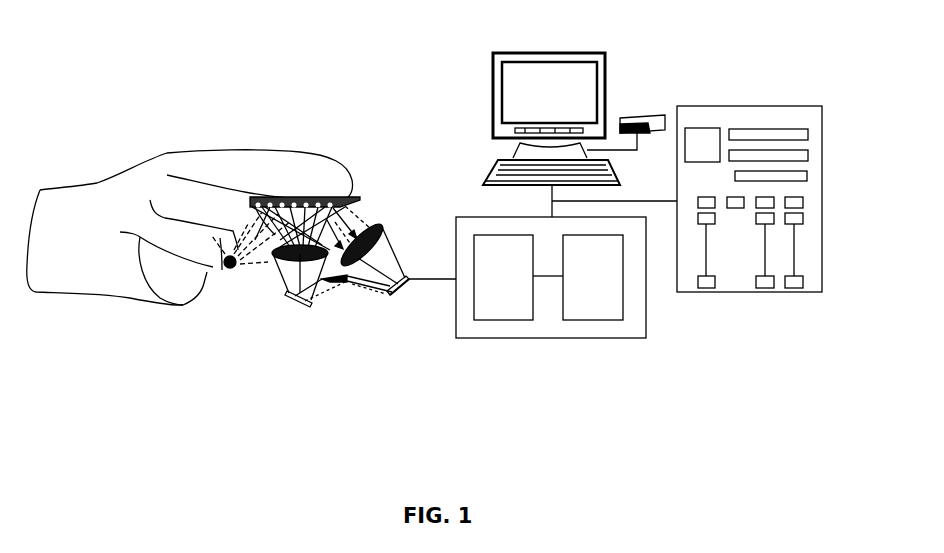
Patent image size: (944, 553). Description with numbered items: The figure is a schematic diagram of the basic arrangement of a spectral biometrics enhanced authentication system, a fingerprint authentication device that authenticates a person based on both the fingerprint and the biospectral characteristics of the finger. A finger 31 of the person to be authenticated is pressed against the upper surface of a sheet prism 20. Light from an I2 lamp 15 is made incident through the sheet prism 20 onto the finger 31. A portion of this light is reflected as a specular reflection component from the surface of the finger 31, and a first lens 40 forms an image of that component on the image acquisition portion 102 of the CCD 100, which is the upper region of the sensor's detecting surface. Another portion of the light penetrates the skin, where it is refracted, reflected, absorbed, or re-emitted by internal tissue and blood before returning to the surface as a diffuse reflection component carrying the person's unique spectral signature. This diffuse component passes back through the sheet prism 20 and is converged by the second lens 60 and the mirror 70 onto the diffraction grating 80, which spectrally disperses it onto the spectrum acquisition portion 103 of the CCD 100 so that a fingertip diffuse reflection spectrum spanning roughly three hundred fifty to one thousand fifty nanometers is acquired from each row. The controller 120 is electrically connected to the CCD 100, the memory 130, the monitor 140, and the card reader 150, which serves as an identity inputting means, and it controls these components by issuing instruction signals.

The finger 31 is at (190, 227).
The I2 lamp 15 is at (251, 248).
The sheet prism 20 is at (313, 221).
The first lens 40 is at (370, 250).
The second lens 60 is at (300, 272).
The mirror 70 is at (315, 299).
The diffraction grating 80 is at (334, 273).
The CCD 100 is at (369, 291).
The image acquisition portion 102 is at (421, 285).
The spectrum acquisition portion 103 is at (401, 293).
The controller 120 is at (566, 281).
The memory 130 is at (749, 184).
The monitor 140 is at (560, 104).
The card reader 150 is at (642, 106).